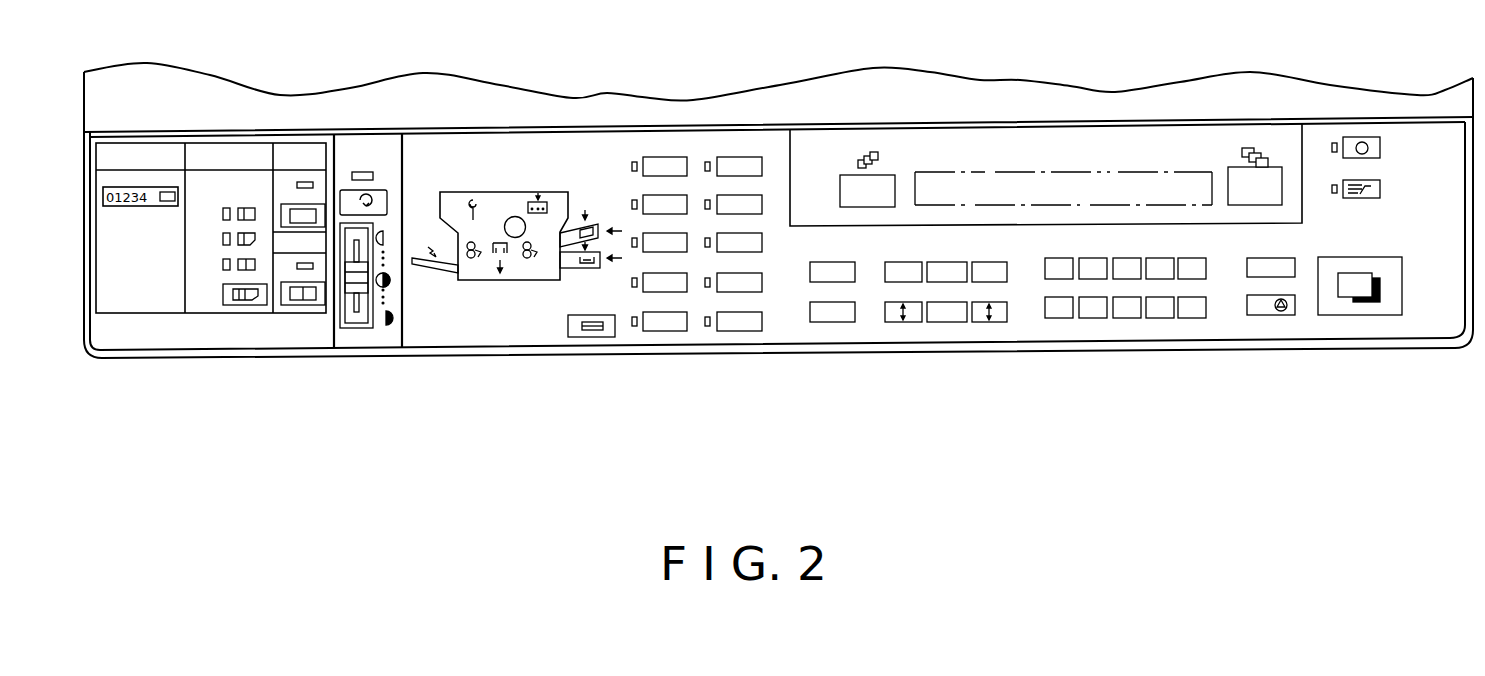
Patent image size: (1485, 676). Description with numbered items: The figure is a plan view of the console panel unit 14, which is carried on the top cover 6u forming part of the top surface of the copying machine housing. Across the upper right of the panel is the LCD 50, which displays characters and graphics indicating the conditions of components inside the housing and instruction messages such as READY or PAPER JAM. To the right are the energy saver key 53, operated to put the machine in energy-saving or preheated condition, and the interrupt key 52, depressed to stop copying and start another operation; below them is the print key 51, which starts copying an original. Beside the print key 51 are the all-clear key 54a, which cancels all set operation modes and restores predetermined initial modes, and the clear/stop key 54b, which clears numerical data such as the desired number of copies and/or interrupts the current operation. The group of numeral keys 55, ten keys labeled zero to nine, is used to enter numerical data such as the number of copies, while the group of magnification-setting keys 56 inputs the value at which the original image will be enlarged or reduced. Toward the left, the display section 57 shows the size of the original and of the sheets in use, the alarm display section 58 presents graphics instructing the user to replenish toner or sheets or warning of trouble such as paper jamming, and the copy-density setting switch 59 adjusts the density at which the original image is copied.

The top cover 6u is at (782, 84).
The console panel unit 14 is at (1433, 348).
The LCD 50 is at (1182, 135).
The print key 51 is at (1373, 315).
The interrupt key 52 is at (1345, 183).
The energy saver key 53 is at (1370, 137).
The all-clear key 54a is at (1247, 272).
The clear/stop key 54b is at (1283, 315).
The group of numeral keys 55 is at (1042, 318).
The group of magnification-setting keys 56 is at (1012, 350).
The display section 57 is at (767, 350).
The alarm display section 58 is at (500, 280).
The copy-density setting switch 59 is at (367, 340).